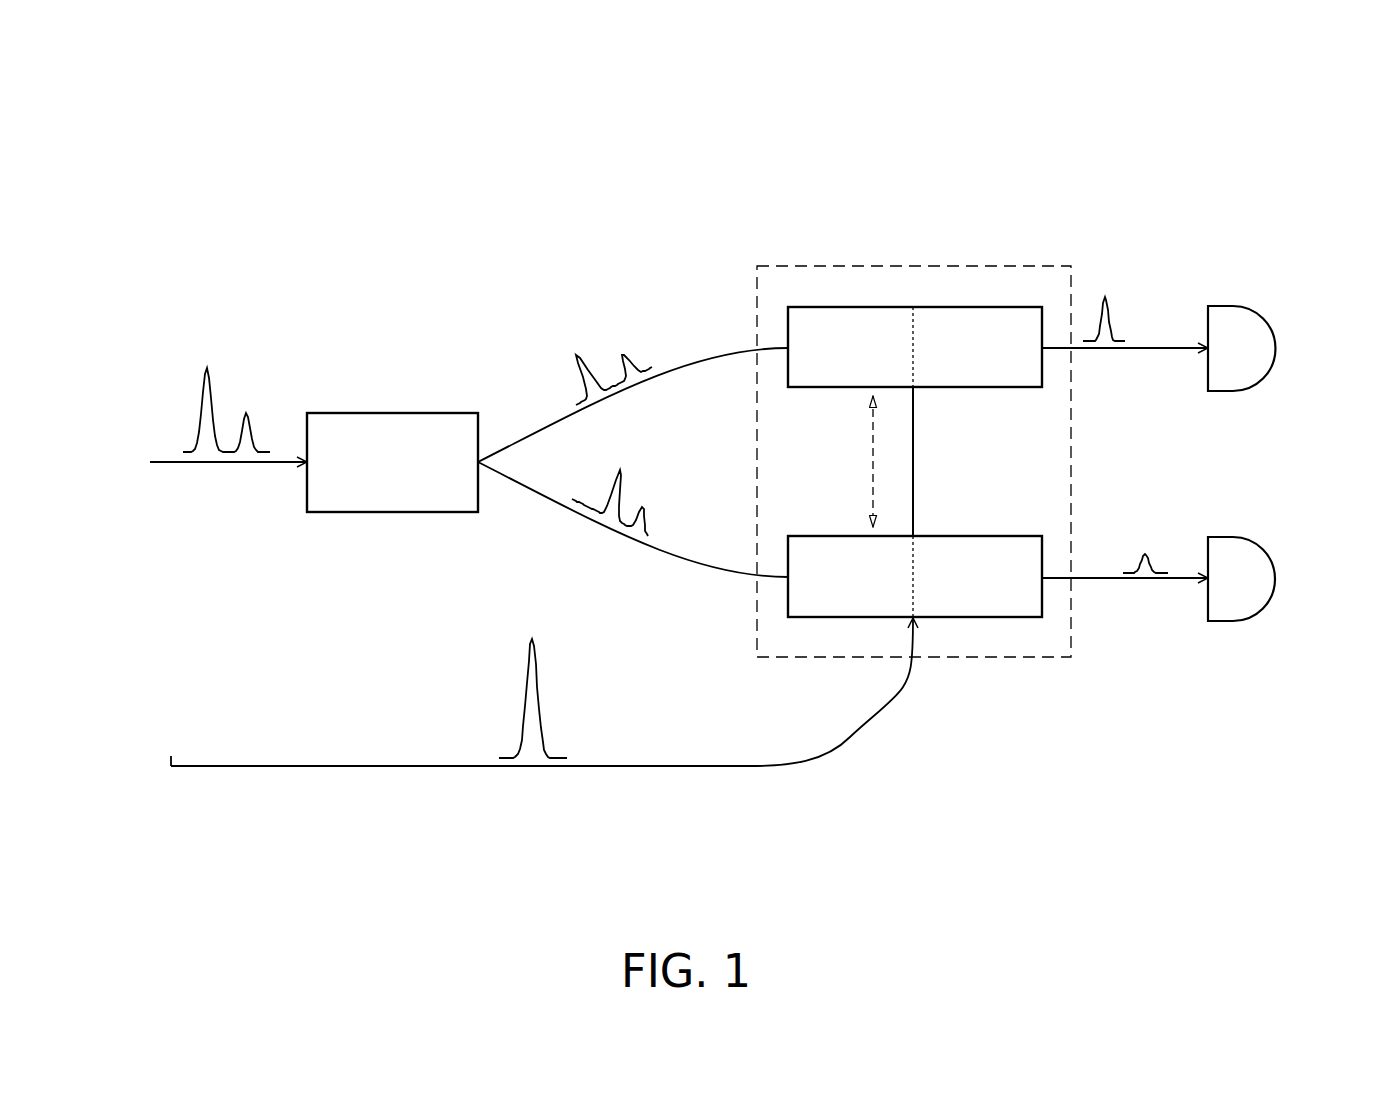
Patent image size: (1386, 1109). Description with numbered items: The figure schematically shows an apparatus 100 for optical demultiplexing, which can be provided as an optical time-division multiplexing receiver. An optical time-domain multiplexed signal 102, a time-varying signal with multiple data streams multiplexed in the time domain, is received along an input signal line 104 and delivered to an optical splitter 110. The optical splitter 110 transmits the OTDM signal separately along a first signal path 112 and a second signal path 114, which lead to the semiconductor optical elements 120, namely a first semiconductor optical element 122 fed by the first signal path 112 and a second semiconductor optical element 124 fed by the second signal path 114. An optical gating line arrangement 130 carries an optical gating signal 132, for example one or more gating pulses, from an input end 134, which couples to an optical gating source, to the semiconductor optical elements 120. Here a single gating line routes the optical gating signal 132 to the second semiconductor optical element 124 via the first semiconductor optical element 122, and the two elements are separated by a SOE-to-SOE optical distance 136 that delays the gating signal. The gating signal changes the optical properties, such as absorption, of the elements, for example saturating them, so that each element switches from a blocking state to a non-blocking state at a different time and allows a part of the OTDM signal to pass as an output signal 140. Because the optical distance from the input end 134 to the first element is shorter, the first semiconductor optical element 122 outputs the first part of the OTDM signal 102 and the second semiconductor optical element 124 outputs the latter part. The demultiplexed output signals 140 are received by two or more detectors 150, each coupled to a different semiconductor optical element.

The apparatus 100 is at (1277, 137).
The optical time-domain multiplexed signal 102 is at (183, 393).
The input signal line 104 is at (167, 475).
The optical splitter 110 is at (392, 403).
The first signal path 112 is at (710, 585).
The second signal path 114 is at (535, 417).
The semiconductor optical elements 120 is at (848, 257).
The first semiconductor optical element 122 is at (977, 632).
The second semiconductor optical element 124 is at (990, 302).
The optical gating line arrangement 130 is at (316, 781).
The optical gating signal 132 is at (503, 698).
The input end 134 is at (172, 754).
The SOE-to-SOE optical distance 136 is at (863, 448).
The output signal 140 is at (1119, 314).
The detectors 150 is at (1289, 523).